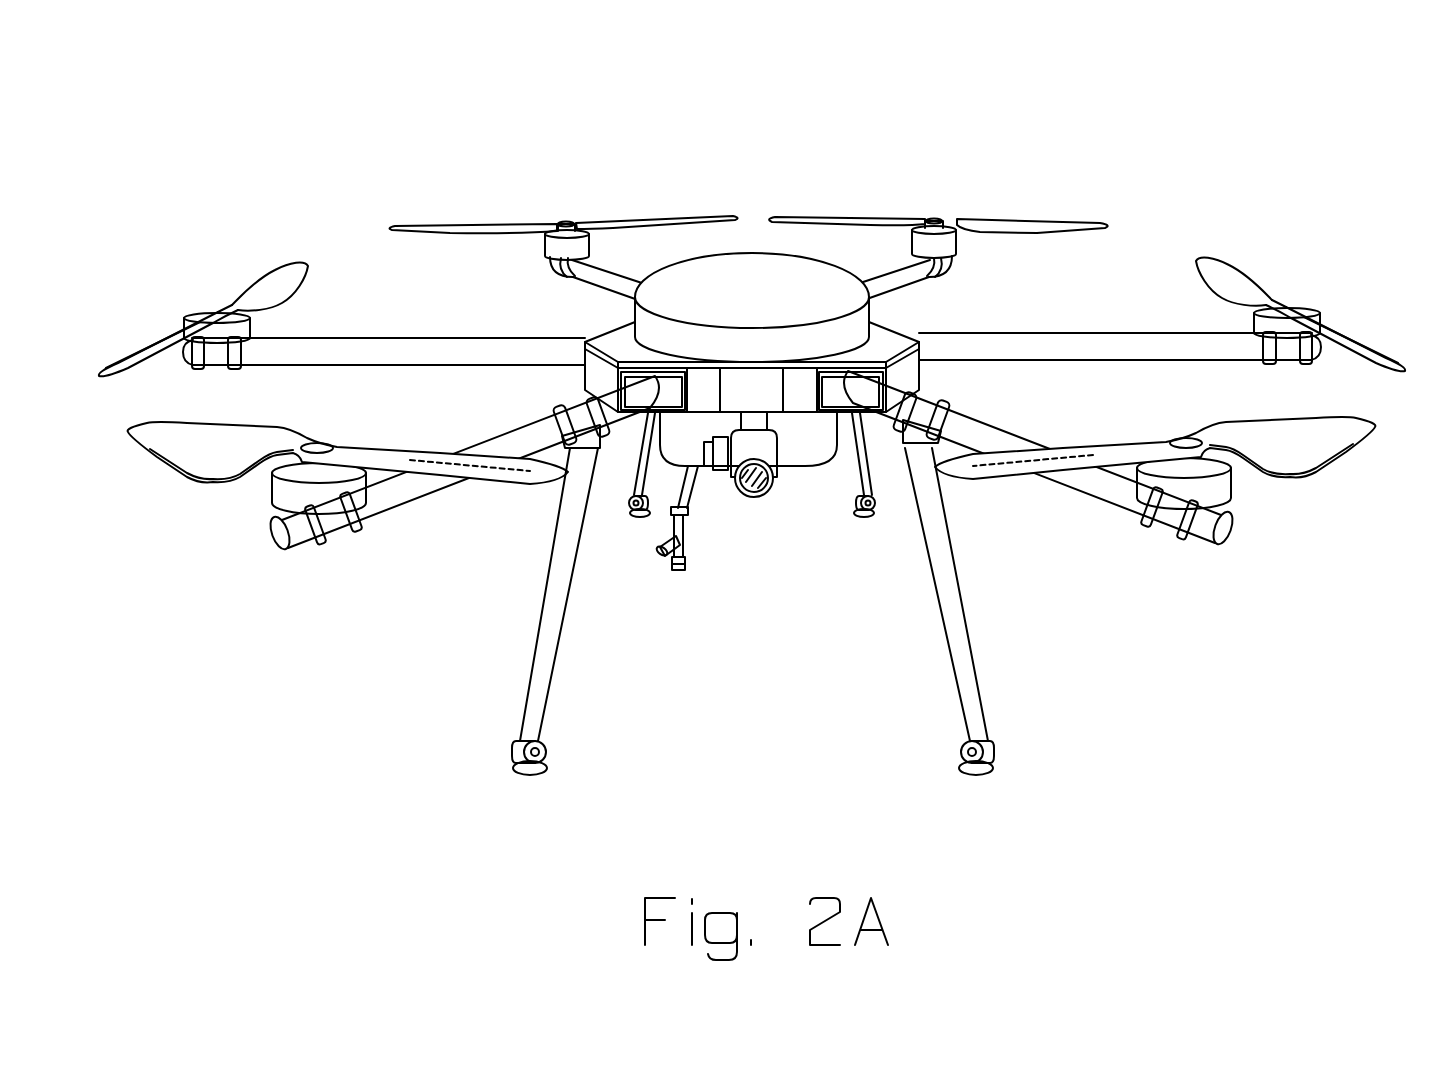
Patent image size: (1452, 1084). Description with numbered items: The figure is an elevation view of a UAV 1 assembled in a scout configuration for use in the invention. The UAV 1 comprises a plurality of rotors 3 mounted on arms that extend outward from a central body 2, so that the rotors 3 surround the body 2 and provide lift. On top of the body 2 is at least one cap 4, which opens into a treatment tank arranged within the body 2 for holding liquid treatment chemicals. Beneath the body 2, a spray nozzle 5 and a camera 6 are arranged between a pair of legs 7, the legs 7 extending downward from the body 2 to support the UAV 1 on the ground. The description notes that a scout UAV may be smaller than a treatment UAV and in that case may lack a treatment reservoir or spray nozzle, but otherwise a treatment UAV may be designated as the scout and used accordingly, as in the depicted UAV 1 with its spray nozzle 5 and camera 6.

The UAV 1 is at (752, 431).
The body 2 is at (1003, 285).
The rotors 3 is at (521, 230).
The cap 4 is at (757, 307).
The spray nozzle 5 is at (705, 632).
The camera 6 is at (813, 572).
The legs 7 is at (1052, 675).